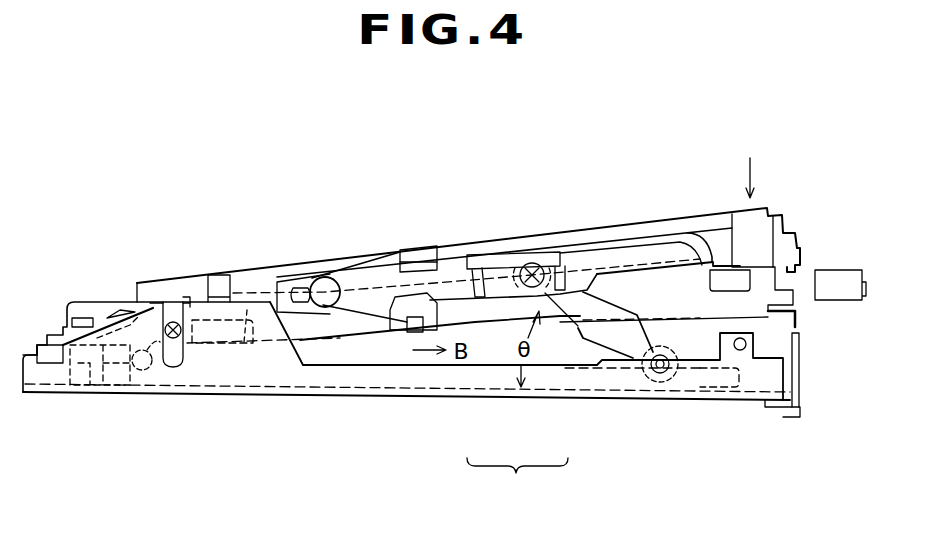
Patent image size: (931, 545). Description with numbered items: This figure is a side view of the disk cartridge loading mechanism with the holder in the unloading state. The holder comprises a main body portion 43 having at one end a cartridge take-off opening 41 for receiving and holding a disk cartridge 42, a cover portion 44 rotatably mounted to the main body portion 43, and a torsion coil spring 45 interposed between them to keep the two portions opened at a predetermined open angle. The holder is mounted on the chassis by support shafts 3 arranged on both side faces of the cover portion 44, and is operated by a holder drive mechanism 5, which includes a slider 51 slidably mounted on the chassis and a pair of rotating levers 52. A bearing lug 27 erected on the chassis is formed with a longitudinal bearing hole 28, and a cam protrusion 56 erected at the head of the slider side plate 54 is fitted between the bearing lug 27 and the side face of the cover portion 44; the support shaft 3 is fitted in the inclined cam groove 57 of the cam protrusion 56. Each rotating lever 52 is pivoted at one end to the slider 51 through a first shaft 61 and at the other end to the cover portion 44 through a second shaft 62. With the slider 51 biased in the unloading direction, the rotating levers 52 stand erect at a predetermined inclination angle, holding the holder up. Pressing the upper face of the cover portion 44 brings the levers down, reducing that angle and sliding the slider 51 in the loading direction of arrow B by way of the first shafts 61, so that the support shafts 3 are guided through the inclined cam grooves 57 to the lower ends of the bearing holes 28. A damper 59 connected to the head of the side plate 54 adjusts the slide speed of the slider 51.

The support shaft 3 is at (169, 295).
The holder drive mechanism 5 is at (517, 483).
The bearing lug 27 is at (248, 310).
The longitudinal bearing hole 28 is at (176, 322).
The cartridge take-off opening 41 is at (793, 293).
The disk cartridge 42 is at (845, 278).
The main body portion 43 is at (661, 282).
The cover portion 44 is at (641, 230).
The torsion coil spring 45 is at (345, 270).
The slider 51 is at (507, 390).
The rotating lever 52 is at (588, 364).
The side plate 54 is at (408, 375).
The cam protrusion 56 is at (257, 345).
The inclined cam groove 57 is at (150, 368).
The damper 59 is at (47, 337).
The first shaft 61 is at (660, 370).
The second shaft 62 is at (533, 262).